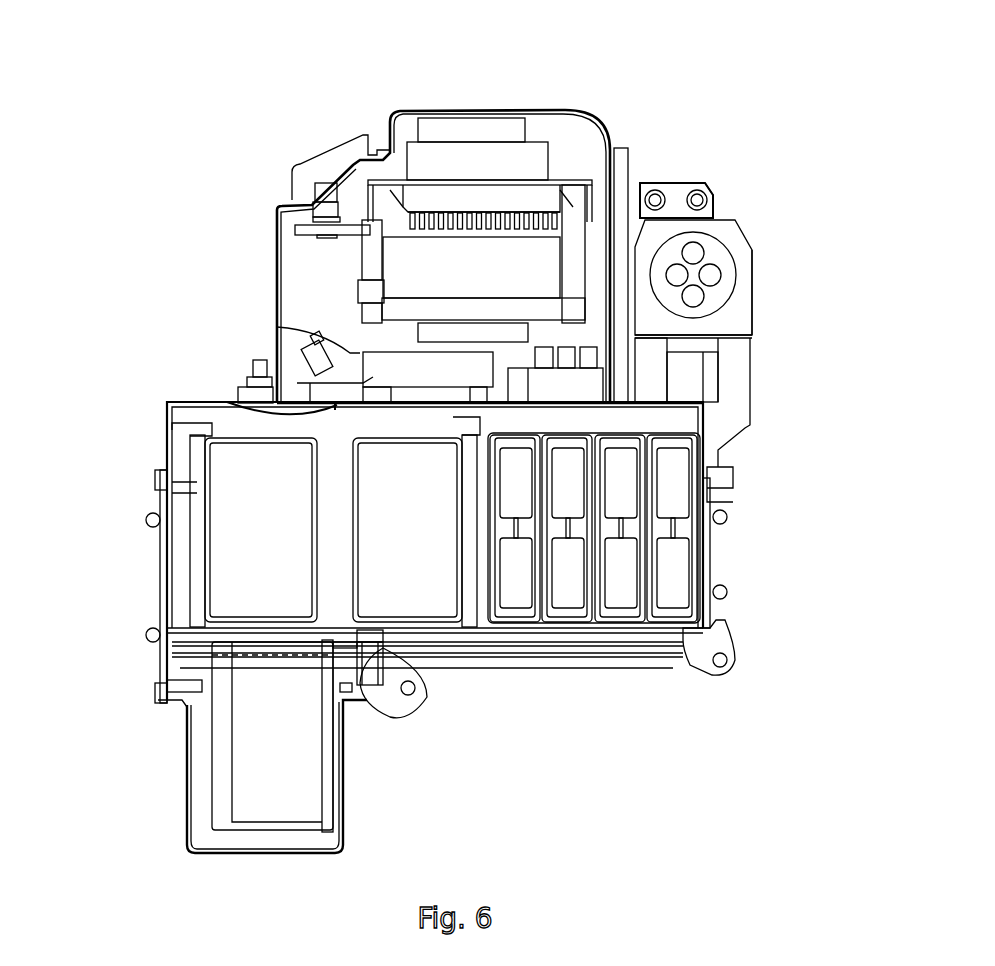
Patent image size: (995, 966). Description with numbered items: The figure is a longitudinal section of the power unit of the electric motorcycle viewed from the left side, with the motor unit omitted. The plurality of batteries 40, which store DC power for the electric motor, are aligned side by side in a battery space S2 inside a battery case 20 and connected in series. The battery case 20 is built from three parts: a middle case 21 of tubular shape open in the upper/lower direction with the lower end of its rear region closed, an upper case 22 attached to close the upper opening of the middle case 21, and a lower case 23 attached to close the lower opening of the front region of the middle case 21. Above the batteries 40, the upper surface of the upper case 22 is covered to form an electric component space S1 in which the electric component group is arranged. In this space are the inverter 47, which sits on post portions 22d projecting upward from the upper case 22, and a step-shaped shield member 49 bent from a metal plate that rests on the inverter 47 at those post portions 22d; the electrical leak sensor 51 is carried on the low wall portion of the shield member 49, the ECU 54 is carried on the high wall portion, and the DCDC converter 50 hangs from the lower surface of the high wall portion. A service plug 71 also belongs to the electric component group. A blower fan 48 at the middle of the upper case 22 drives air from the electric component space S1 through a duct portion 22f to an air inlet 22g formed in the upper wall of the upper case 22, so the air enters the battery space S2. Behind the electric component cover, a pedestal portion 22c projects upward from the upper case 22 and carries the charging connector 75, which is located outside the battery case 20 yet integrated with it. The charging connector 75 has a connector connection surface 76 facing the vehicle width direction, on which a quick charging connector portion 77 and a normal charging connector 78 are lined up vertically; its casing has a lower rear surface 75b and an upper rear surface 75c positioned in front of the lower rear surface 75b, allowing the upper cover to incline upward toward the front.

The battery case 20 is at (384, 627).
The middle case 21 is at (160, 567).
The upper case 22 is at (150, 458).
The lower case 23 is at (221, 746).
The pedestal portion 22c is at (653, 373).
The post portions 22d is at (373, 337).
The duct portion 22f is at (277, 327).
The air inlet 22g is at (227, 402).
The batteries 40 is at (270, 597).
The inverter 47 is at (405, 270).
The blower fan 48 is at (373, 377).
The shield member 49 is at (362, 192).
The DCDC converter 50 is at (527, 192).
The electrical leak sensor 51 is at (487, 128).
The ECU 54 is at (452, 158).
The service plug 71 is at (340, 178).
The charging connector 75 is at (747, 232).
The lower rear surface 75b is at (753, 273).
The upper rear surface 75c is at (713, 212).
The connector connection surface 76 is at (743, 290).
The quick charging connector portion 77 is at (713, 257).
The normal charging connector 78 is at (698, 188).
The electric component space S1 is at (577, 138).
The battery space S2 is at (678, 417).